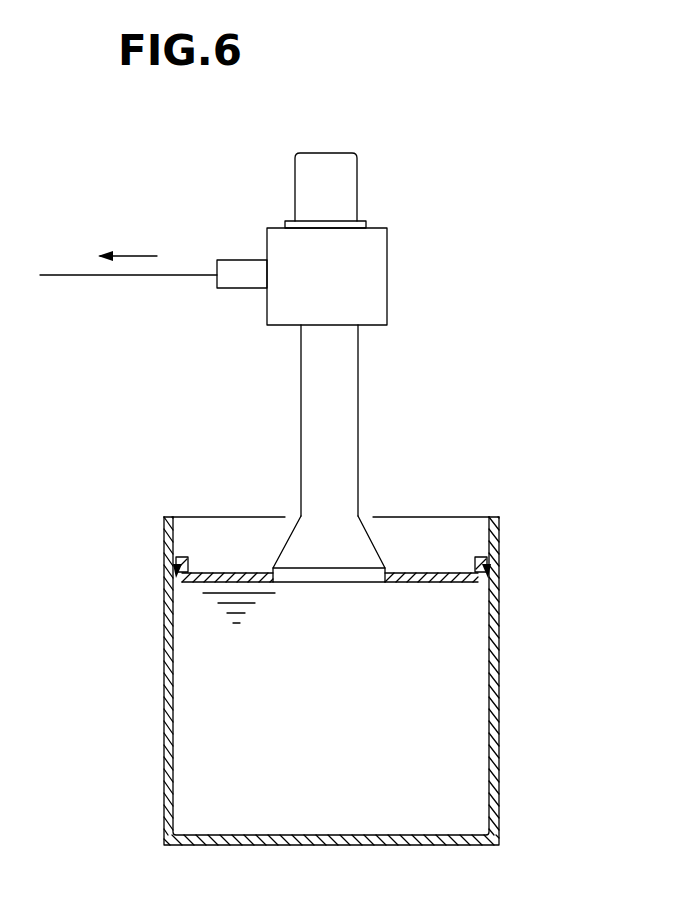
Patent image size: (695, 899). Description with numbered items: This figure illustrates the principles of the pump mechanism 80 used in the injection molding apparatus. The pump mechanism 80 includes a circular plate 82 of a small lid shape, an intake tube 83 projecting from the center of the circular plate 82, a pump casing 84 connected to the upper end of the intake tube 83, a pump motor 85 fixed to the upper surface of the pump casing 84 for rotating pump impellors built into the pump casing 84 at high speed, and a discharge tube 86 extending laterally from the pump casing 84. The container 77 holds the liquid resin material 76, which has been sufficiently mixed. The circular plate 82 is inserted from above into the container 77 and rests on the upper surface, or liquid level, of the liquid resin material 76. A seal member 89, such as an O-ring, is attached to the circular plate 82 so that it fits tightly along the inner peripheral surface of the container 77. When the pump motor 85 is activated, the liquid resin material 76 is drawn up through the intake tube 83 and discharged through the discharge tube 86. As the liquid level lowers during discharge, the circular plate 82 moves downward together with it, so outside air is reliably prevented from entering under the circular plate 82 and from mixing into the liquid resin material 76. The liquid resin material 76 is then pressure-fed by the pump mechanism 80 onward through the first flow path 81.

The liquid resin material 76 is at (422, 678).
The container 77 is at (164, 708).
The pump mechanism 80 is at (487, 198).
The first flow path 81 is at (58, 272).
The circular plate 82 is at (438, 572).
The intake tube 83 is at (300, 420).
The pump casing 84 is at (385, 292).
The pump motor 85 is at (345, 185).
The discharge tube 86 is at (238, 259).
The seal member 89 is at (490, 568).